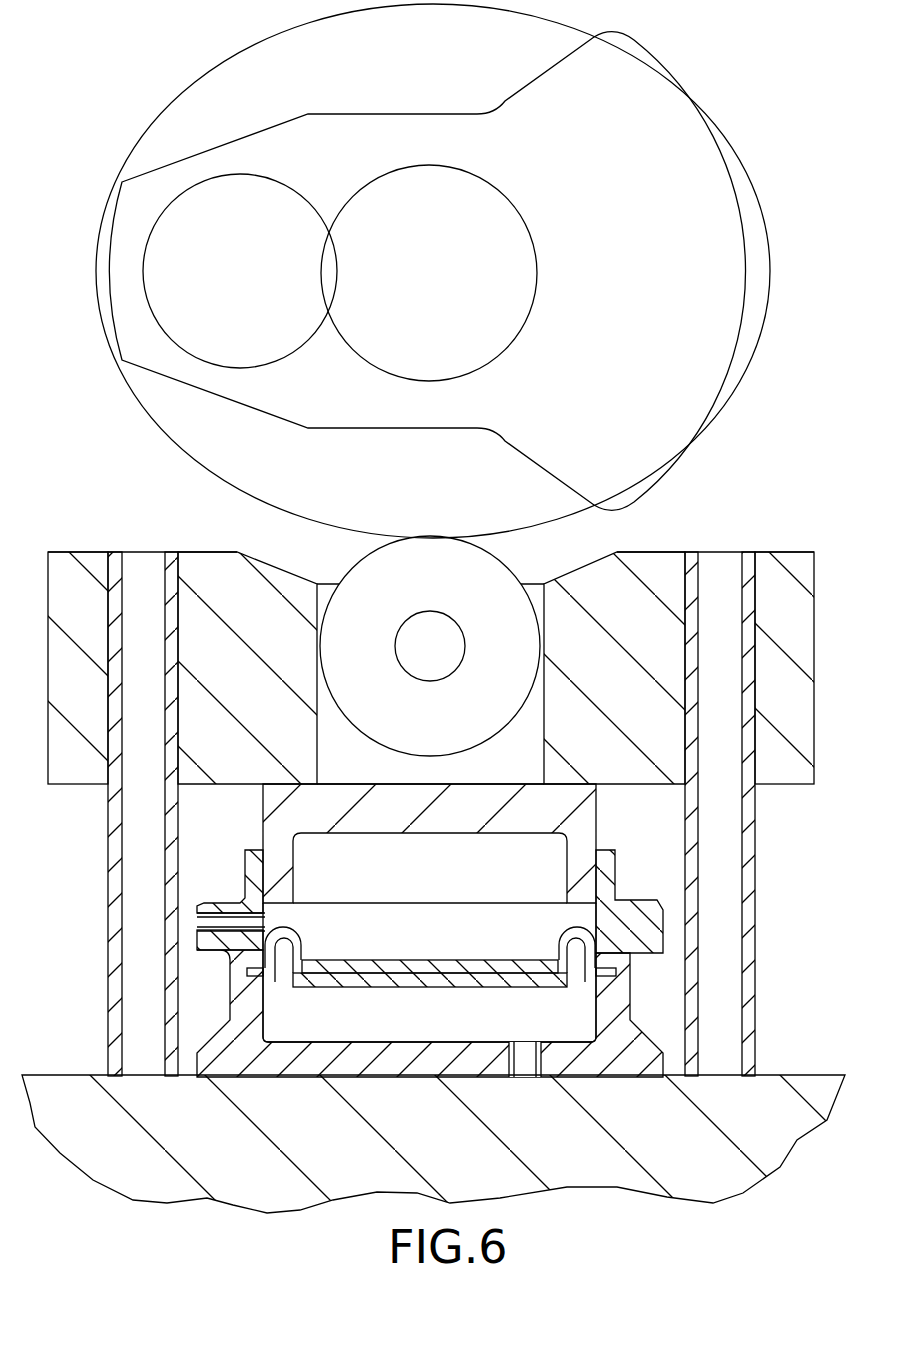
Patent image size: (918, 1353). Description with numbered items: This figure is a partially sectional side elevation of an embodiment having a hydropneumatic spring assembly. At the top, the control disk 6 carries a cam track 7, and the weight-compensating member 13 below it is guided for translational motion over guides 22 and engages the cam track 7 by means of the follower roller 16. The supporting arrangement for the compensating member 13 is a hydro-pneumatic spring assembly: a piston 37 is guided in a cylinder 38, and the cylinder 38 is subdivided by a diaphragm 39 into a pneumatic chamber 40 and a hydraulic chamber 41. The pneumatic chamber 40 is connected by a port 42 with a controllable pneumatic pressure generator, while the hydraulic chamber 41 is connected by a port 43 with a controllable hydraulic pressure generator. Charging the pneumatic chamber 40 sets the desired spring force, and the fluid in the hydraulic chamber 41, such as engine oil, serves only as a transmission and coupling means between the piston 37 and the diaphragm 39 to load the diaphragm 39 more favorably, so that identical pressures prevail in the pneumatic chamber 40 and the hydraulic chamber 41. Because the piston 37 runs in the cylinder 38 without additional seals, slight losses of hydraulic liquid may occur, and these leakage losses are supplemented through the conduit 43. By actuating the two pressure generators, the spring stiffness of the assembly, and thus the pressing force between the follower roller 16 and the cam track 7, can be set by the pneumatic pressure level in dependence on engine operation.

The control disk 6 is at (180, 405).
The cam track 7 is at (167, 440).
The weight-compensating member 13 is at (658, 570).
The follower roller 16 is at (492, 580).
The guides 22 is at (115, 840).
The piston 37 is at (578, 820).
The cylinder 38 is at (610, 995).
The diaphragm 39 is at (399, 975).
The pneumatic chamber 40 is at (497, 1028).
The hydraulic chamber 41 is at (488, 883).
The port 42 is at (527, 1079).
The port 43 is at (206, 923).